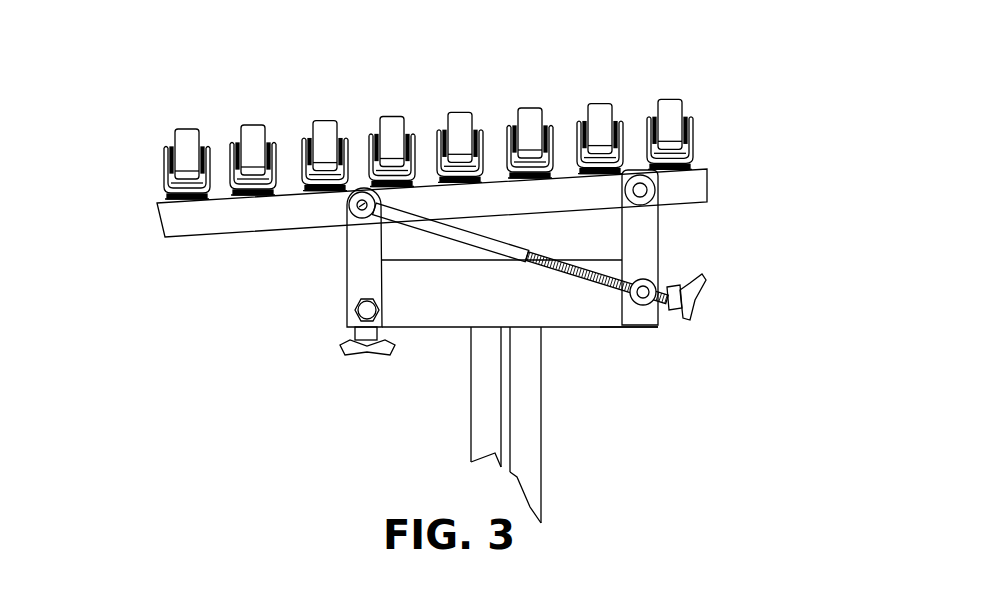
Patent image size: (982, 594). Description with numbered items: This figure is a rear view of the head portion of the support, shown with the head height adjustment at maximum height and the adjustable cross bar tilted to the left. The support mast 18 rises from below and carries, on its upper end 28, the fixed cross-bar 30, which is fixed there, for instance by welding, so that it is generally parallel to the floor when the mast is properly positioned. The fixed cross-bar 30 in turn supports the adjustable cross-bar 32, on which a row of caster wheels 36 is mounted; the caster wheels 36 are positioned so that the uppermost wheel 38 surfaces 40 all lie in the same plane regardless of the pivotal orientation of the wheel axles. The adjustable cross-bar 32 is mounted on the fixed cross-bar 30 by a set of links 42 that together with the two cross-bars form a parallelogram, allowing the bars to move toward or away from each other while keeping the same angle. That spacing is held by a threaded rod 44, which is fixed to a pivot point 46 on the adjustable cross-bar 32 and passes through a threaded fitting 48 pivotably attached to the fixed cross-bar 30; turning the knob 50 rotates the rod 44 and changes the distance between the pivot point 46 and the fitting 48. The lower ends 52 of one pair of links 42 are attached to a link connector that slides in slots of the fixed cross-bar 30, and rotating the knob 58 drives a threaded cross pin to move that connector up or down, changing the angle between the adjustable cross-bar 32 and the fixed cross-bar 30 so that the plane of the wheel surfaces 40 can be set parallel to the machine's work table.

The support mast 18 is at (533, 458).
The upper end of mast 28 is at (523, 327).
The fixed cross-bar 30 is at (622, 317).
The adjustable cross-bar 32 is at (695, 190).
The caster wheels 36 is at (165, 168).
The wheel 38 is at (173, 135).
The wheel surfaces 40 is at (320, 122).
The links 42 is at (352, 228).
The threaded rod 44 is at (457, 237).
The pivot point 46 is at (350, 209).
The threaded fitting 48 is at (647, 293).
The knob 50 is at (705, 296).
The lower ends of links 52 is at (347, 310).
The knob 58 is at (385, 355).